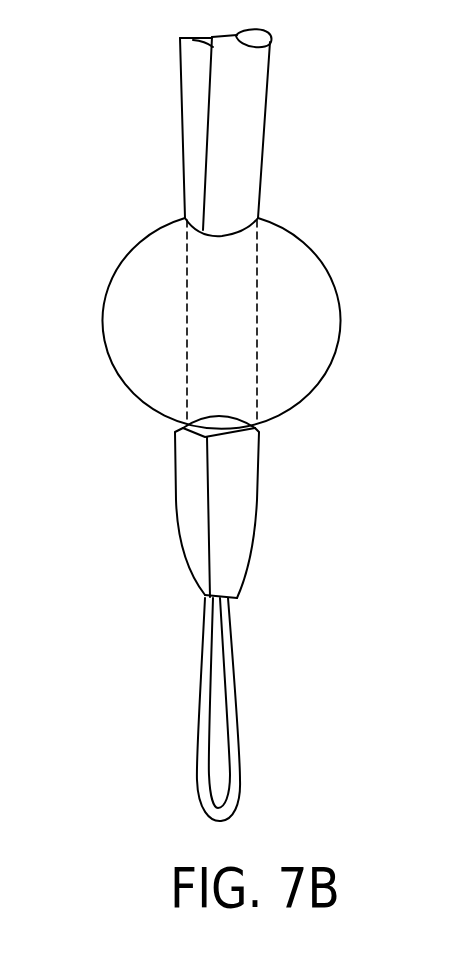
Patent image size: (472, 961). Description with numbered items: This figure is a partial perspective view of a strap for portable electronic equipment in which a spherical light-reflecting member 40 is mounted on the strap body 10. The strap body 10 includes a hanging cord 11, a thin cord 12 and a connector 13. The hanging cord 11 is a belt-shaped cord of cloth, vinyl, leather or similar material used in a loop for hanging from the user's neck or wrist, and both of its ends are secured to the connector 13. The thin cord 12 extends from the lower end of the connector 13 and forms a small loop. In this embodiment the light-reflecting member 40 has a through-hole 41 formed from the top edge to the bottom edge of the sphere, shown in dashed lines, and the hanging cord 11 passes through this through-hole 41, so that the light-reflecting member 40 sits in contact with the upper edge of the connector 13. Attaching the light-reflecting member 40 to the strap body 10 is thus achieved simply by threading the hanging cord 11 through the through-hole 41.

The strap body 10 is at (171, 148).
The hanging cord 11 is at (262, 118).
The thin cord 12 is at (229, 641).
The connector 13 is at (258, 500).
The light-reflecting member 40 is at (338, 312).
The through-hole 41 is at (238, 283).